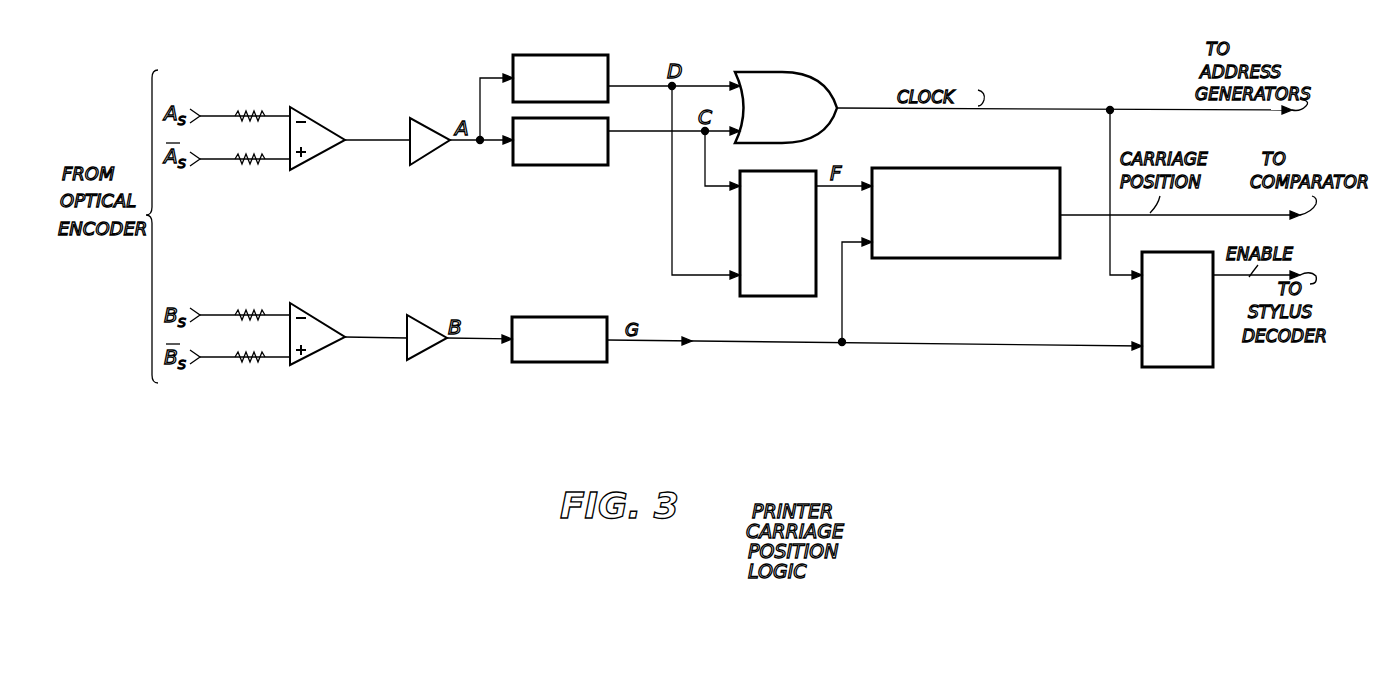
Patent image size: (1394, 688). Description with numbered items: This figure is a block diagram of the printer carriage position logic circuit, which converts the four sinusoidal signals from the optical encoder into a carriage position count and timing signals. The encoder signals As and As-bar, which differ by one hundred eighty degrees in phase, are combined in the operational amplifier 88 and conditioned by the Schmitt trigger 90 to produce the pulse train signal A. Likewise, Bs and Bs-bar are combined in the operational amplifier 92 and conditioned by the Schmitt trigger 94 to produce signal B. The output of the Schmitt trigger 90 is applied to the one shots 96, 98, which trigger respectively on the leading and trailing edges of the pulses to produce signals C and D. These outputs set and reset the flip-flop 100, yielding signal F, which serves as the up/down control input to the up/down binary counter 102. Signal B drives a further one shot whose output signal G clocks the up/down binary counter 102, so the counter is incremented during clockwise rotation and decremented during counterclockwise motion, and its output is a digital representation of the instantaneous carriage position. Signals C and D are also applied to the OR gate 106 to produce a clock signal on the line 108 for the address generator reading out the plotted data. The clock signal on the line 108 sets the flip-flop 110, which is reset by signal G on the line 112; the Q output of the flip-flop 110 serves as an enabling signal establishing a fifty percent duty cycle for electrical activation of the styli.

The operational amplifier 88 is at (318, 127).
The Schmitt trigger 90 is at (424, 120).
The operational amplifier 92 is at (318, 326).
The Schmitt trigger 94 is at (422, 325).
The one shot 96 is at (533, 166).
The one shot 98 is at (592, 57).
The flip-flop 100 is at (740, 233).
The up/down binary counter 102 is at (948, 262).
The OR gate 106 is at (788, 72).
The line 108 is at (1062, 102).
The flip-flop 110 is at (1200, 366).
The line 112 is at (770, 348).